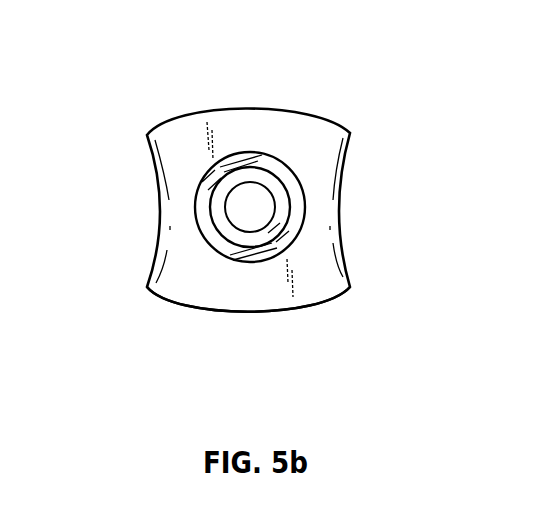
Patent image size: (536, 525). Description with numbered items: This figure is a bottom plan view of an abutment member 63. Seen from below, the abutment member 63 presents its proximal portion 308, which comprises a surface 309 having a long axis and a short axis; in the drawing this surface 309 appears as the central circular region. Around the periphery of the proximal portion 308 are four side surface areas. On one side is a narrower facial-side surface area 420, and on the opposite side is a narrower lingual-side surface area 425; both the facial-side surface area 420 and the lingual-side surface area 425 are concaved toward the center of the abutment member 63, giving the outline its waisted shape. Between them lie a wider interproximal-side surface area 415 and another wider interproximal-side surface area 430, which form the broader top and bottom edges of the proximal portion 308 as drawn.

The abutment member 63 is at (149, 79).
The proximal portion 308 is at (157, 128).
The interproximal-side surface area 430 is at (267, 107).
The surface 309 is at (263, 142).
The facial-side surface area 420 is at (342, 192).
The lingual-side surface area 425 is at (160, 213).
The interproximal-side surface area 415 is at (252, 312).